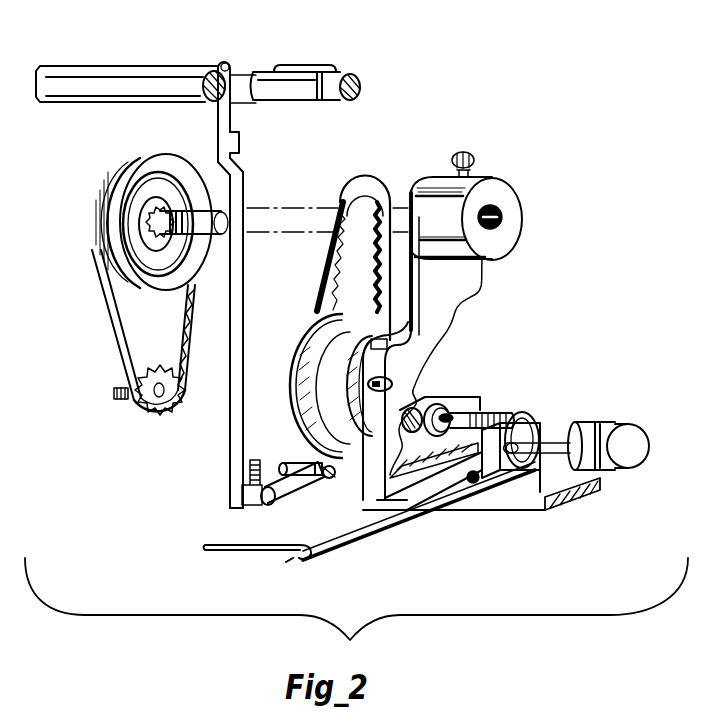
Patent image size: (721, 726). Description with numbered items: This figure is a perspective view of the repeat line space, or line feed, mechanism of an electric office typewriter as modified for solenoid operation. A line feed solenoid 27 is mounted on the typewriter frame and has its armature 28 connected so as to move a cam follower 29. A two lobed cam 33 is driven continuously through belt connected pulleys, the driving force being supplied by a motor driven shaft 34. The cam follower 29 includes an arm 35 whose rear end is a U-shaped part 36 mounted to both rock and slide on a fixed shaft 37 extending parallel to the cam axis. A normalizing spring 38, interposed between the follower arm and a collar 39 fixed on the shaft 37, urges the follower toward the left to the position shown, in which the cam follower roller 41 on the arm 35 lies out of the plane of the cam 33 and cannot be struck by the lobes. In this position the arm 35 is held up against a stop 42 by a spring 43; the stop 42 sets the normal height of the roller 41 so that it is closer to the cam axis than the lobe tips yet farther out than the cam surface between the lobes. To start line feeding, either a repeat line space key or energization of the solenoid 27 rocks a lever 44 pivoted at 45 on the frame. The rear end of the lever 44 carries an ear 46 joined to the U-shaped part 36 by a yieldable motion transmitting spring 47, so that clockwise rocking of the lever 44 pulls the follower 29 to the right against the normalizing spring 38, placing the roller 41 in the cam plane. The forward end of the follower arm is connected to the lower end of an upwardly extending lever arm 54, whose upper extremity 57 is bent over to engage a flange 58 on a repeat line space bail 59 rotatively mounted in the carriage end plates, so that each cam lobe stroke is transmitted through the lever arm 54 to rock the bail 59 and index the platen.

The line feed solenoid 27 is at (607, 427).
The armature 28 is at (565, 436).
The cam follower 29 is at (303, 504).
The two lobed cam 33 is at (344, 328).
The motor driven shaft 34 is at (118, 392).
The arm 35 is at (390, 450).
The U-shaped part 36 is at (470, 393).
The fixed shaft 37 is at (480, 411).
The normalizing spring 38 is at (410, 393).
The collar 39 is at (437, 395).
The cam follower roller 41 is at (333, 480).
The stop 42 is at (307, 467).
The spring 43 is at (254, 460).
The lever 44 is at (431, 507).
The pivot 45 is at (518, 476).
The ear 46 is at (537, 422).
The yieldable motion transmitting spring 47 is at (523, 417).
The lever arm 54 is at (236, 326).
The upper extremity 57 is at (226, 118).
The flange 58 is at (300, 68).
The repeat line space bail 59 is at (361, 88).